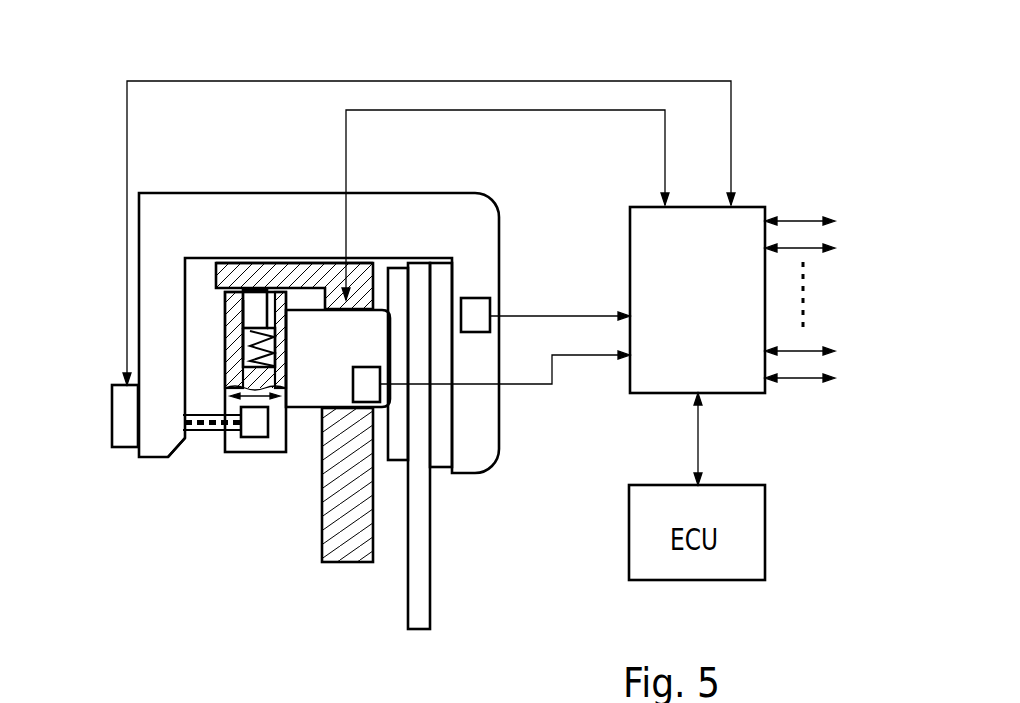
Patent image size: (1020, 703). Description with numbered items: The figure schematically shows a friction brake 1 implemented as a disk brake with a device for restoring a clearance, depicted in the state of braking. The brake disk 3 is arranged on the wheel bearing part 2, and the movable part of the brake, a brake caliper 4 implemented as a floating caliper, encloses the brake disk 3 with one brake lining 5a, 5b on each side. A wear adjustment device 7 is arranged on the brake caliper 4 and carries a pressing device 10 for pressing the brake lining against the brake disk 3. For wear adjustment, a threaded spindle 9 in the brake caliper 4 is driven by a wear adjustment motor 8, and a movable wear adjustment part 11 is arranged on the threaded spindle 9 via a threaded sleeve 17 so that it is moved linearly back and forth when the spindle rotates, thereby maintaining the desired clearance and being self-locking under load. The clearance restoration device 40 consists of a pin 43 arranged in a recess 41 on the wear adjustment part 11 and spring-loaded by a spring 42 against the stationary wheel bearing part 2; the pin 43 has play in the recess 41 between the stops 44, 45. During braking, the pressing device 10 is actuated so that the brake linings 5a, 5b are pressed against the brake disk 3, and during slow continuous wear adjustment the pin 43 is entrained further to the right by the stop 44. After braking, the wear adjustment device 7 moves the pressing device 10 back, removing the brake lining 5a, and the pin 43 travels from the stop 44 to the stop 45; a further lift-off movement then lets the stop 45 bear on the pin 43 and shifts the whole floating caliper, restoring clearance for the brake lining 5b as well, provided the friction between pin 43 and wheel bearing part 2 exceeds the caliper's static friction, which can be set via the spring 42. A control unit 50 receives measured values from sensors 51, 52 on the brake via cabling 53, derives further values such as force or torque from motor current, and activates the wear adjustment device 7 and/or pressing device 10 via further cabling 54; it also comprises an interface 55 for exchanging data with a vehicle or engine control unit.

The friction brake 1 is at (299, 550).
The wheel bearing part 2 is at (352, 518).
The brake disk 3 is at (423, 540).
The brake caliper 4 is at (163, 226).
The brake lining 5a is at (399, 288).
The brake lining 5b is at (442, 288).
The wear adjustment device 7 is at (180, 450).
The wear adjustment motor 8 is at (127, 420).
The threaded spindle 9 is at (217, 422).
The pressing device 10 is at (343, 354).
The wear adjustment part 11 is at (278, 428).
The threaded sleeve 17 is at (255, 425).
The clearance restoration device 40 is at (259, 258).
The recess 41 is at (242, 335).
The spring 42 is at (270, 352).
The pin 43 is at (253, 310).
The stop 44 is at (253, 313).
The stop 45 is at (272, 300).
The control unit 50 is at (727, 303).
The sensor 51 is at (365, 385).
The sensor 52 is at (473, 313).
The cabling 53 is at (577, 316).
The further cabling 54 is at (570, 81).
The interface 55 is at (698, 438).